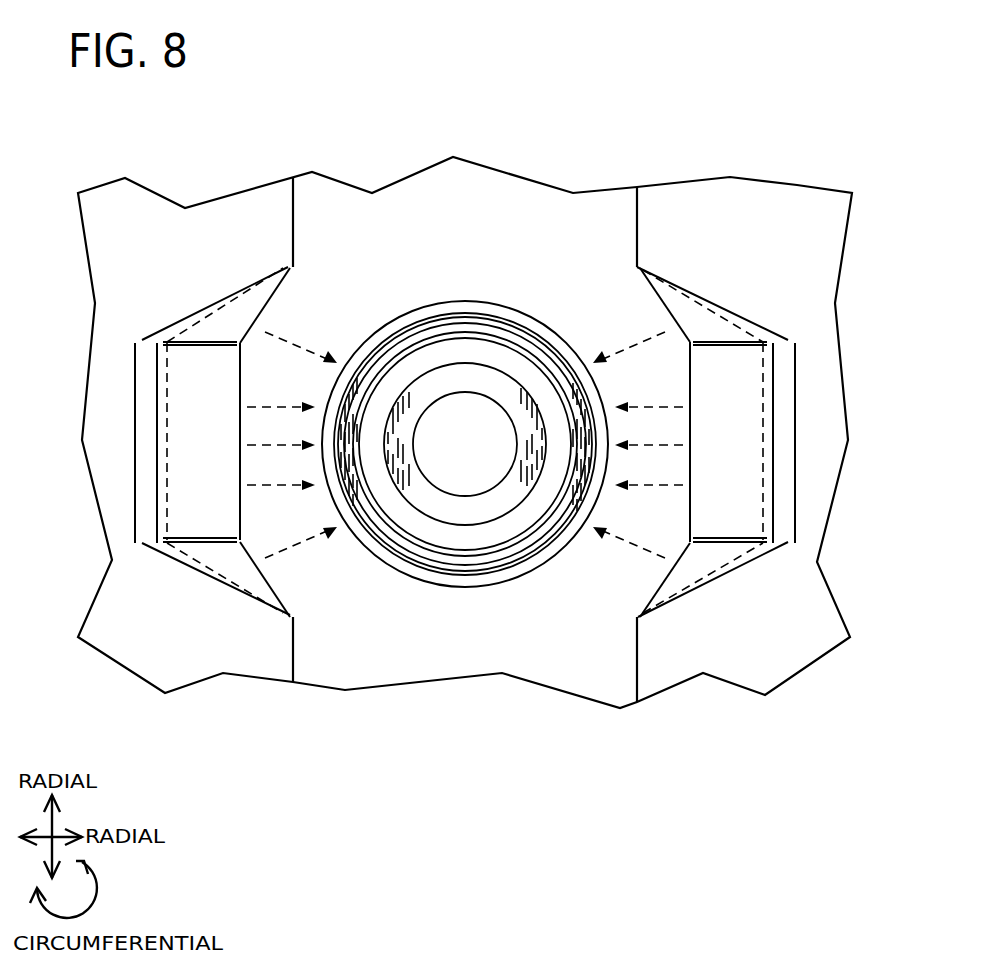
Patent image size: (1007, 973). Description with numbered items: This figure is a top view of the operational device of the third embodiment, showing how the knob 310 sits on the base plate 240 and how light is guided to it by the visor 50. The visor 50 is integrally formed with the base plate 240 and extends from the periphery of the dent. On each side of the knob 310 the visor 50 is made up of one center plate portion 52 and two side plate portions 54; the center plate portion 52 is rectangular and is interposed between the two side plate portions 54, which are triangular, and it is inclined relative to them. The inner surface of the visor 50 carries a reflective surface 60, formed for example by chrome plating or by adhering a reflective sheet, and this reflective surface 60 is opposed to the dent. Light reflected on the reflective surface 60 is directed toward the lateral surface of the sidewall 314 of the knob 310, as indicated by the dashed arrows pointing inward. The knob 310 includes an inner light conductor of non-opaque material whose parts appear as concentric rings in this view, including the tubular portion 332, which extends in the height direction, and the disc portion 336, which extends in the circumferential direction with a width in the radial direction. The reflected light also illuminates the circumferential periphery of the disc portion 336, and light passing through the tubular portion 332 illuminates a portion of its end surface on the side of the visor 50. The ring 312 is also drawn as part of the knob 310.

The base plate 240 is at (691, 174).
The visor 50 is at (730, 302).
The center plate portion 52 is at (178, 445).
The side plate portion 54 is at (208, 318).
The reflective surface 60 is at (270, 307).
The knob 310 is at (558, 313).
The inner ring 312 is at (478, 352).
The sidewall 314 is at (360, 383).
The tubular portion 332 is at (467, 508).
The disc portion 336 is at (528, 545).